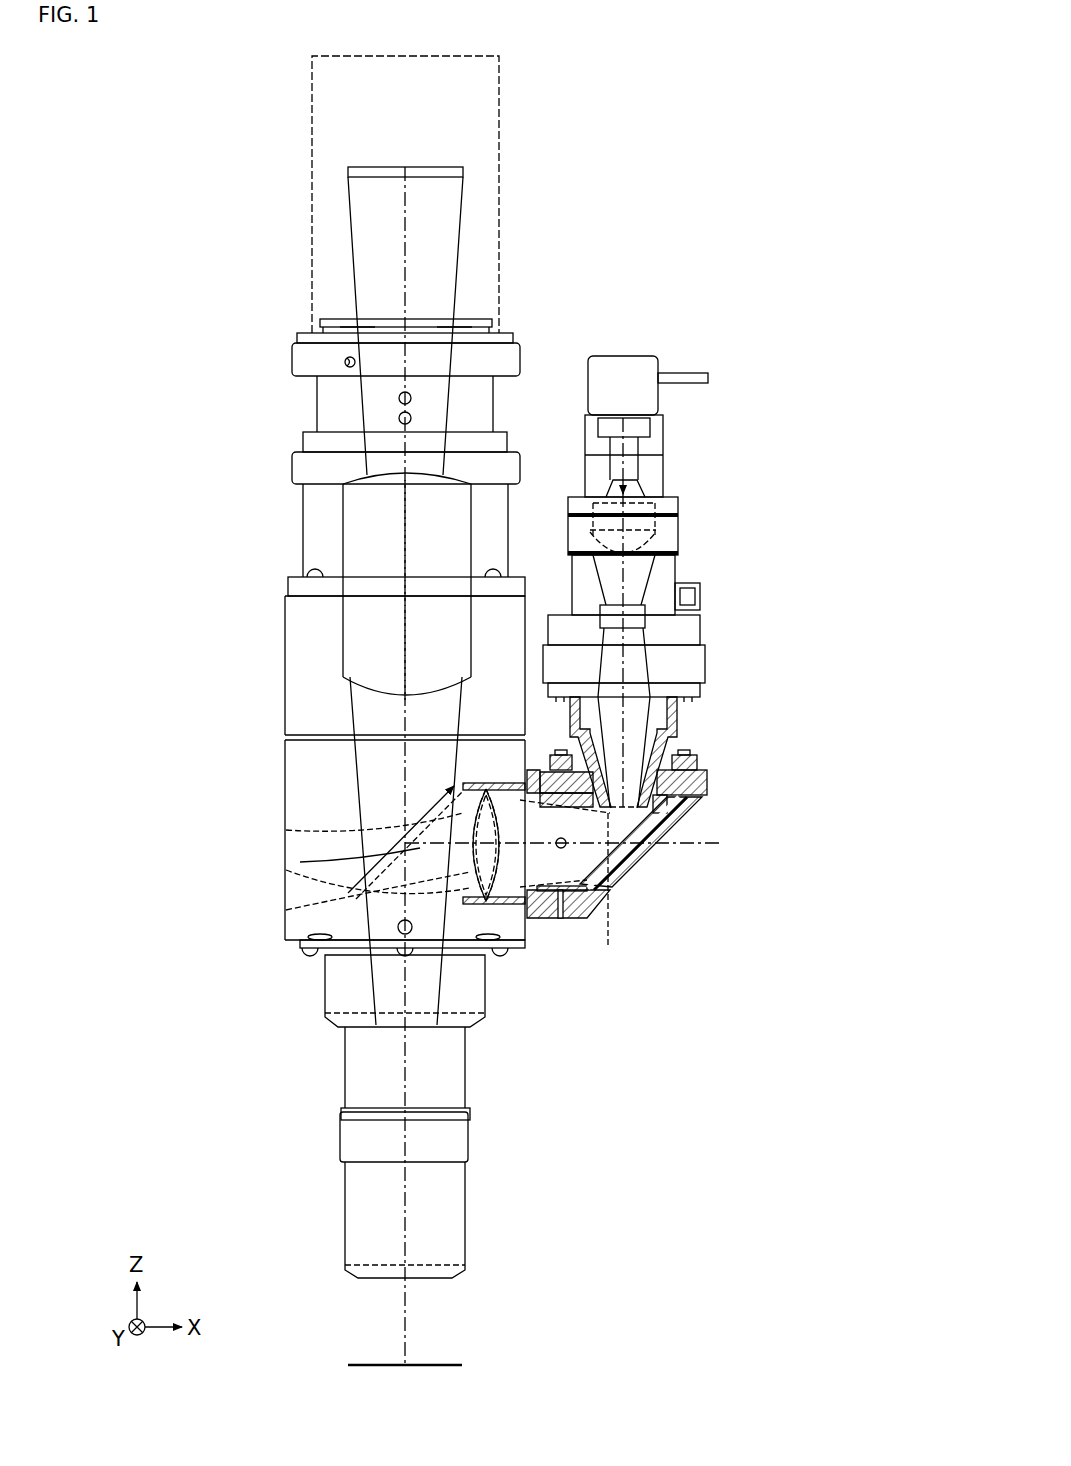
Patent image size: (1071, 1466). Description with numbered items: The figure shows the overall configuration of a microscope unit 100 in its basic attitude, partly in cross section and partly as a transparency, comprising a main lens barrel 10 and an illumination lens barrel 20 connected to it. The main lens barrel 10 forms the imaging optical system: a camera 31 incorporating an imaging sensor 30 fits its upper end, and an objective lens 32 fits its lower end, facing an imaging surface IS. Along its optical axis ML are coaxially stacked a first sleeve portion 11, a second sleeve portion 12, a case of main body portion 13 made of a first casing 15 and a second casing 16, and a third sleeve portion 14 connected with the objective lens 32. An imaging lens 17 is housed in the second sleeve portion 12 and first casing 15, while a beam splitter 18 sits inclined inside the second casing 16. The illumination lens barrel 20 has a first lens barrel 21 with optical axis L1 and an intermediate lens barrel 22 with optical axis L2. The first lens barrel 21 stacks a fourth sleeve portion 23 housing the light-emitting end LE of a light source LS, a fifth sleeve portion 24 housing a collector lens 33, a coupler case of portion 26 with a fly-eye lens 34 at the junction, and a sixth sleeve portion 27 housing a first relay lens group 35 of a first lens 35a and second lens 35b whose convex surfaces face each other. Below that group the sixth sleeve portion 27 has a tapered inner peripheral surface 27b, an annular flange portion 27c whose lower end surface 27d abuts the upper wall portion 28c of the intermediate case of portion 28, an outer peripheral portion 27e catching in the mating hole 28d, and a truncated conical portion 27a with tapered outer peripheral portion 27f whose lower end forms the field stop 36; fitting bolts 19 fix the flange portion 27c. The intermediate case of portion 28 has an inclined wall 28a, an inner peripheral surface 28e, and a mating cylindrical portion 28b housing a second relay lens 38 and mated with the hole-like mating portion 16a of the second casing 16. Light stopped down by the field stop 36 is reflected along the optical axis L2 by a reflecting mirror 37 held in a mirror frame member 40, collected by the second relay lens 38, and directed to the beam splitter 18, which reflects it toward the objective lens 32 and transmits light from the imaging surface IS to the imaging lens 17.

The microscope unit 100 is at (656, 270).
The main lens barrel 10 is at (198, 478).
The first sleeve portion 11 is at (287, 409).
The second sleeve portion 12 is at (287, 551).
The case of main body portion 13 is at (178, 700).
The third sleeve portion 14 is at (318, 996).
The first casing 15 is at (282, 686).
The second casing 16 is at (282, 806).
The mating portion 16a is at (286, 828).
The imaging lens 17 is at (287, 620).
The beam splitter 18 is at (300, 862).
The fitting bolts 19 is at (690, 742).
The illumination lens barrel 20 is at (770, 440).
The first lens barrel 21 is at (732, 496).
The intermediate lens barrel 22 is at (676, 853).
The fourth sleeve portion 23 is at (672, 432).
The fifth sleeve portion 24 is at (690, 541).
The coupler case of portion 26 is at (713, 633).
The sixth sleeve portion 27 is at (690, 730).
The truncated conical portion 27a is at (705, 776).
The inner peripheral surface 27b is at (572, 725).
The flange portion 27c is at (556, 766).
The lower end surface 27d is at (540, 776).
The outer peripheral portion 27e is at (700, 768).
The outer peripheral portion 27f is at (703, 800).
The intermediate case of portion 28 is at (573, 932).
The inclined wall 28a is at (624, 900).
The mating cylindrical portion 28b is at (490, 912).
The upper wall portion 28c is at (705, 784).
The mating hole 28d is at (608, 905).
The inner peripheral surface 28e is at (688, 818).
The imaging sensor 30 is at (348, 172).
The camera 31 is at (312, 118).
The objective lens 32 is at (331, 1218).
The collector lens 33 is at (680, 522).
The fly-eye lens 34 is at (680, 611).
The first relay lens group 35 is at (775, 648).
The first lens 35a is at (701, 668).
The second lens 35b is at (686, 712).
The field stop 36 is at (705, 843).
The reflecting mirror 37 is at (651, 868).
The second relay lens 38 is at (350, 895).
The mirror frame member 40 is at (571, 922).
The light source LS is at (660, 368).
The light-emitting end LE is at (650, 485).
The optical axis L1 is at (663, 553).
The optical axis L2 is at (530, 905).
The optical axis ML is at (405, 522).
The imaging surface IS is at (370, 1365).